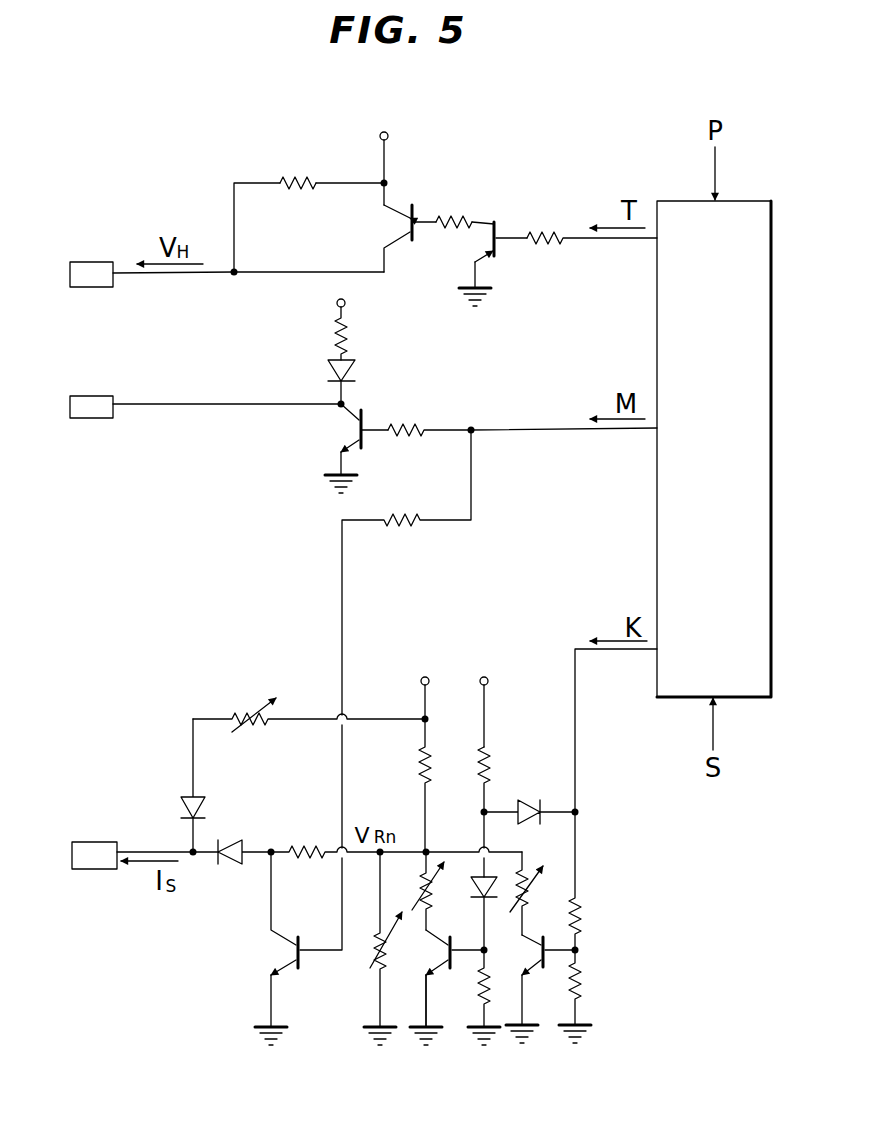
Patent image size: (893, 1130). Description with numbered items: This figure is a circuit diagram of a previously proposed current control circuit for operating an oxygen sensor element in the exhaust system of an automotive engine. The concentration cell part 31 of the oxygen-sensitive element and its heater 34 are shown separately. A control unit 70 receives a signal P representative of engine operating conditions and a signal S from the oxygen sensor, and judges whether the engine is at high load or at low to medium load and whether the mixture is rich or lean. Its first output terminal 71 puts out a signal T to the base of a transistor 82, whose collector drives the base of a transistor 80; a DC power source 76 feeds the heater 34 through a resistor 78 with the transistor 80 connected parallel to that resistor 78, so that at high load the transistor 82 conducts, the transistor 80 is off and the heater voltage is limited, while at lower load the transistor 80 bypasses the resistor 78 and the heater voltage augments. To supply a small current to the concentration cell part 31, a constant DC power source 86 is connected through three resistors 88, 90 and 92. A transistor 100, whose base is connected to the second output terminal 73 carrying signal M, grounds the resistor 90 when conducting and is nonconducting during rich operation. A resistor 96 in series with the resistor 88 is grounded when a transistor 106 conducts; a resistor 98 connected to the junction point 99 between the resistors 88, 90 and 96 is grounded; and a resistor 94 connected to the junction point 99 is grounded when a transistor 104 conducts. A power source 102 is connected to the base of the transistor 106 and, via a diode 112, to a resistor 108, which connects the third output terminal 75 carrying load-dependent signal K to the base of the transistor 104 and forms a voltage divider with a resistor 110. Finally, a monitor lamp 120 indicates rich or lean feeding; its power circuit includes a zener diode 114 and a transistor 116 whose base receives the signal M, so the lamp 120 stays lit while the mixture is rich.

The concentration cell part 31 is at (105, 869).
The heater 34 is at (105, 287).
The control unit 70 is at (657, 504).
The first output terminal 71 is at (660, 238).
The second output terminal 73 is at (660, 428).
The third output terminal 75 is at (660, 649).
The DC power source 76 is at (388, 136).
The resistor 78 is at (302, 179).
The transistor 80 is at (419, 206).
The transistor 82 is at (496, 221).
The constant DC power source 86 is at (421, 681).
The resistor 88 is at (419, 767).
The resistor 90 is at (309, 842).
The resistor 92 is at (247, 709).
The resistor 94 is at (538, 883).
The resistor 96 is at (438, 888).
The resistor 98 is at (368, 945).
The junction point 99 is at (384, 857).
The transistor 100 is at (284, 960).
The power source 102 is at (488, 678).
The transistor 104 is at (538, 968).
The transistor 106 is at (445, 970).
The resistor 108 is at (586, 916).
The resistor 110 is at (582, 975).
The diode 112 is at (492, 765).
The zener diode 114 is at (327, 367).
The transistor 116 is at (366, 409).
The monitor lamp 120 is at (105, 418).